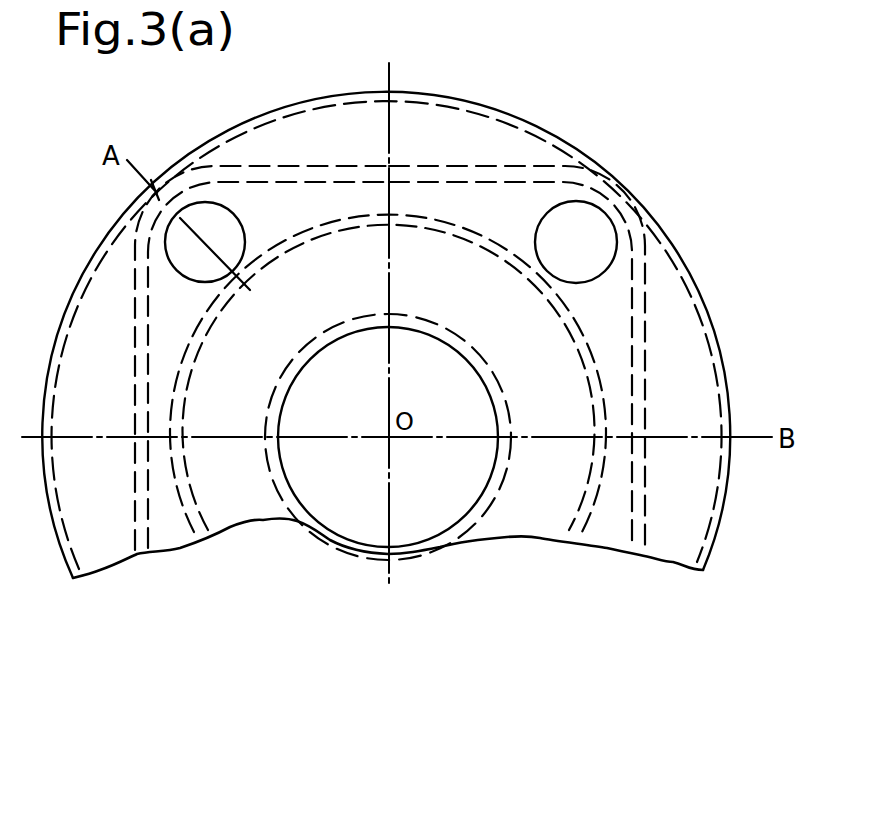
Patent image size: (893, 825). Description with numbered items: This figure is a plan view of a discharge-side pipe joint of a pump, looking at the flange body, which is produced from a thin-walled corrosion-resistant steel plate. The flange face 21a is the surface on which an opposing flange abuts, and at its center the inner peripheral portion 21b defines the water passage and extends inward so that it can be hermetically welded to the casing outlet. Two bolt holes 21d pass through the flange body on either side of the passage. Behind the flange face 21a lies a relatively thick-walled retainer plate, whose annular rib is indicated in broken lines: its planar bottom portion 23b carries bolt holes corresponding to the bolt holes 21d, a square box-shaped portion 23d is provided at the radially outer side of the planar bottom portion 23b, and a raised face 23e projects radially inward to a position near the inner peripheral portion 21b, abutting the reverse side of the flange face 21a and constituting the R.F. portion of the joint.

The flange face 21a is at (518, 122).
The inner peripheral portion 21b is at (487, 397).
The bolt holes 21d is at (229, 210).
The planar bottom portion 23b is at (163, 320).
The square box-shaped portion 23d is at (645, 322).
The raised face 23e is at (465, 344).